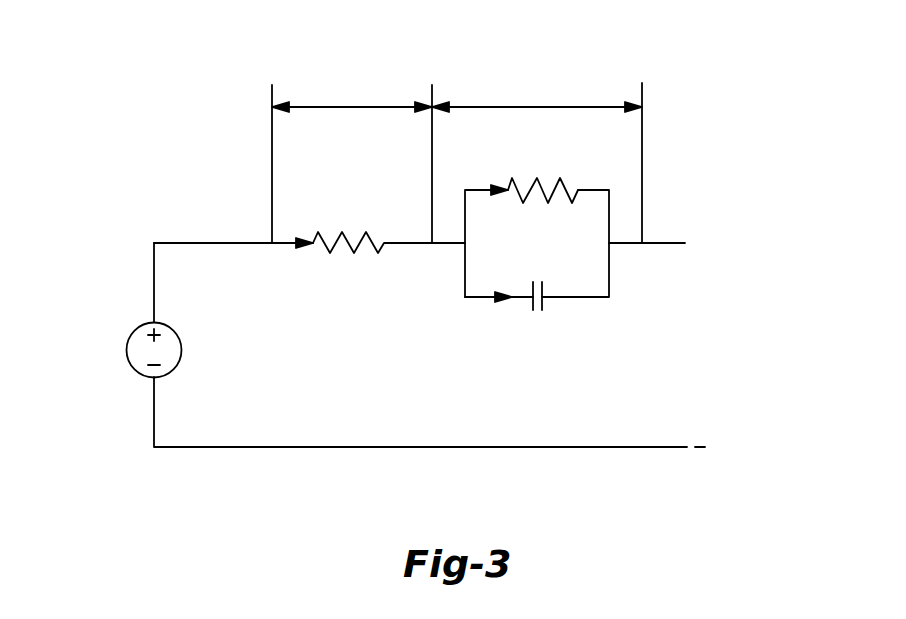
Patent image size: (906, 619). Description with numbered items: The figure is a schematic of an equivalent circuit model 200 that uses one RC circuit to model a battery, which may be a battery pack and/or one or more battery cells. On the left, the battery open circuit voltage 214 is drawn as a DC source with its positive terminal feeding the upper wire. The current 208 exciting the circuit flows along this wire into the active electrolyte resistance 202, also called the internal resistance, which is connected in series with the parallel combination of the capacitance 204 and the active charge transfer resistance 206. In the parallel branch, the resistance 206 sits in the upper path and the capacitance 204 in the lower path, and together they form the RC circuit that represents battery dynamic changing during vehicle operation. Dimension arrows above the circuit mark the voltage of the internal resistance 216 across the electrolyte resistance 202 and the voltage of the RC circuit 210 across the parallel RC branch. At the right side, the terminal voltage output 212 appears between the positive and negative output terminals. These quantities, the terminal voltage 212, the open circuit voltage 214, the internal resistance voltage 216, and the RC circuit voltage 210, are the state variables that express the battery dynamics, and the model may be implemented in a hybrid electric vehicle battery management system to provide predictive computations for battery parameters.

The equivalent circuit model 200 is at (156, 94).
The active electrolyte resistance R0 202 is at (372, 233).
The parallel capacitance C1 204 is at (543, 308).
The active charge transfer resistance R1 206 is at (563, 177).
The current i 208 is at (245, 225).
The voltage of the RC circuit v1 210 is at (540, 75).
The terminal voltage output vt 212 is at (697, 343).
The battery open circuit voltage vOC 214 is at (138, 325).
The voltage of the internal resistance v0 216 is at (342, 78).